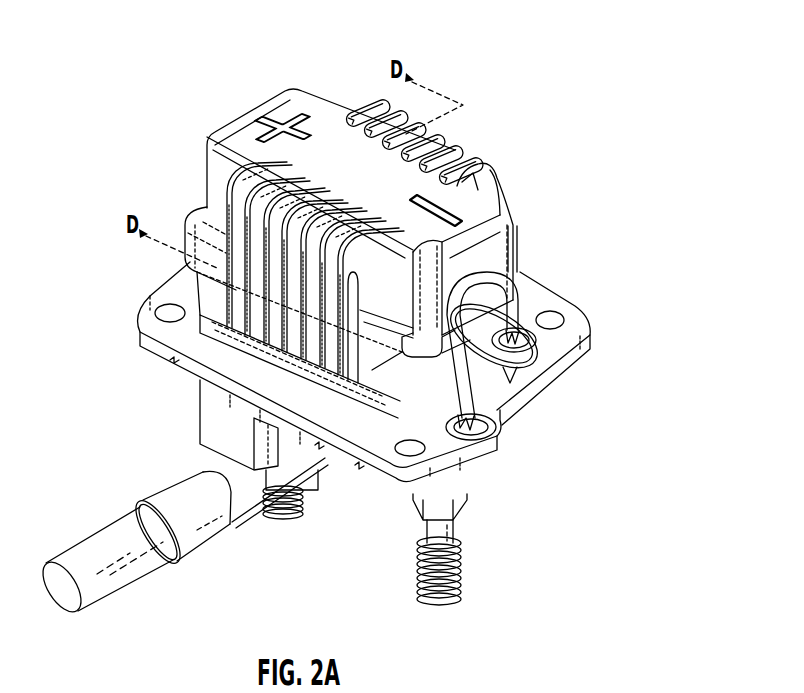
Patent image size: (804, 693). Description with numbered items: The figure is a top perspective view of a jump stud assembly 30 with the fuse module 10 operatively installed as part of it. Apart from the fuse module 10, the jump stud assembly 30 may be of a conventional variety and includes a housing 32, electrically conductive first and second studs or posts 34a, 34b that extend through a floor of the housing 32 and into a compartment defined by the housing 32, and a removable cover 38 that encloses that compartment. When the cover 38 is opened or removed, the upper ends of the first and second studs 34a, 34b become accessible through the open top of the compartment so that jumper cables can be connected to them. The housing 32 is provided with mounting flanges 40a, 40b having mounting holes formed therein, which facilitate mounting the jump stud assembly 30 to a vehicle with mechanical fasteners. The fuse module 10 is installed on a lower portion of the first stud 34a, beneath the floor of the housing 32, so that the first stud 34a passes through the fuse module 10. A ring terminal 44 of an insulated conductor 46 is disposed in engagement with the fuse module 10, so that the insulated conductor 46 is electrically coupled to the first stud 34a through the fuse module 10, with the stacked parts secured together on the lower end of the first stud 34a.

The jump stud assembly 30 is at (140, 165).
The housing 32 is at (505, 398).
The removable cover 38 is at (252, 132).
The mounting flange 40a is at (153, 312).
The mounting flange 40b is at (579, 347).
The fuse module 10 is at (210, 430).
The first stud 34a is at (286, 518).
The second stud 34b is at (437, 606).
The ring terminal 44 is at (184, 497).
The insulated conductor 46 is at (107, 540).